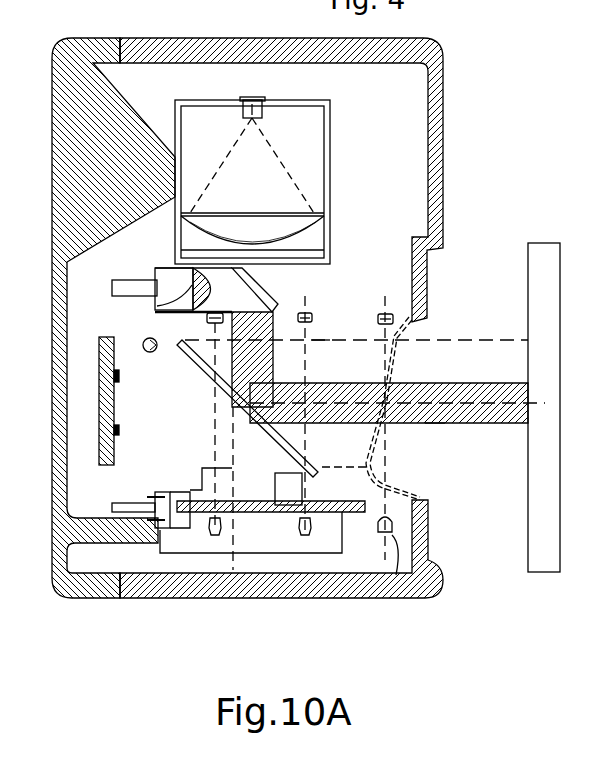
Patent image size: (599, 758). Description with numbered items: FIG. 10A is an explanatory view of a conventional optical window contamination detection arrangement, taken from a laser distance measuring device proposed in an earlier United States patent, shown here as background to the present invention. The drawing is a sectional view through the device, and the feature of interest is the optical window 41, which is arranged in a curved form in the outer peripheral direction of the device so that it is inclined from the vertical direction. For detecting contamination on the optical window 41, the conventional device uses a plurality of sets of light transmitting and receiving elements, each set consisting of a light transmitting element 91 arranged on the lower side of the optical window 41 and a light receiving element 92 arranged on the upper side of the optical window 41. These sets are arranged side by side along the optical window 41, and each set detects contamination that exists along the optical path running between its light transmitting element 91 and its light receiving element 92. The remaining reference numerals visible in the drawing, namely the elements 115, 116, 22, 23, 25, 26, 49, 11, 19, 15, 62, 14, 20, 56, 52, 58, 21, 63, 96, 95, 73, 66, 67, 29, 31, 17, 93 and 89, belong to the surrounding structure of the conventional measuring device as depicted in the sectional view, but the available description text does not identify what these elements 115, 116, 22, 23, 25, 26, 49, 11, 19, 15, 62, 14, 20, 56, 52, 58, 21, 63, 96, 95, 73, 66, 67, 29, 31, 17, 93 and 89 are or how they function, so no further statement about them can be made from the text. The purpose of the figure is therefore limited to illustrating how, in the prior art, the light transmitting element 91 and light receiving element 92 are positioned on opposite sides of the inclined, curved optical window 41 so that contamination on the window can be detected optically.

The housing 115 is at (80, 38).
The housing cover 116 is at (274, 38).
The illumination unit 22 is at (340, 150).
The light source 23 is at (256, 100).
The lens 25 is at (325, 228).
The lens surface 26 is at (326, 250).
The optical assembly 49 is at (160, 252).
The shaft 11 is at (112, 283).
The reflector plate 19 is at (250, 286).
The block 15 is at (268, 372).
The sensor element 62 is at (305, 310).
The light receiving element 92 is at (387, 311).
The wall plate 14 is at (528, 287).
The optical axis 20 is at (474, 352).
The light path 56 is at (310, 347).
The mirror 52 is at (207, 332).
The pivot 58 is at (156, 352).
The beam 21 is at (478, 423).
The beam surface 63 is at (433, 425).
The optical window 41 is at (380, 440).
The axis line 96 is at (215, 397).
The axis line 95 is at (235, 435).
The support 73 is at (300, 452).
The filter plate 66 is at (99, 426).
The marker 67 is at (119, 428).
The bracket 29 is at (158, 492).
The frame 31 is at (160, 542).
The base plate 17 is at (266, 568).
The light transmitting element 91 is at (213, 540).
The fastener 93 is at (305, 540).
The connector 89 is at (428, 498).